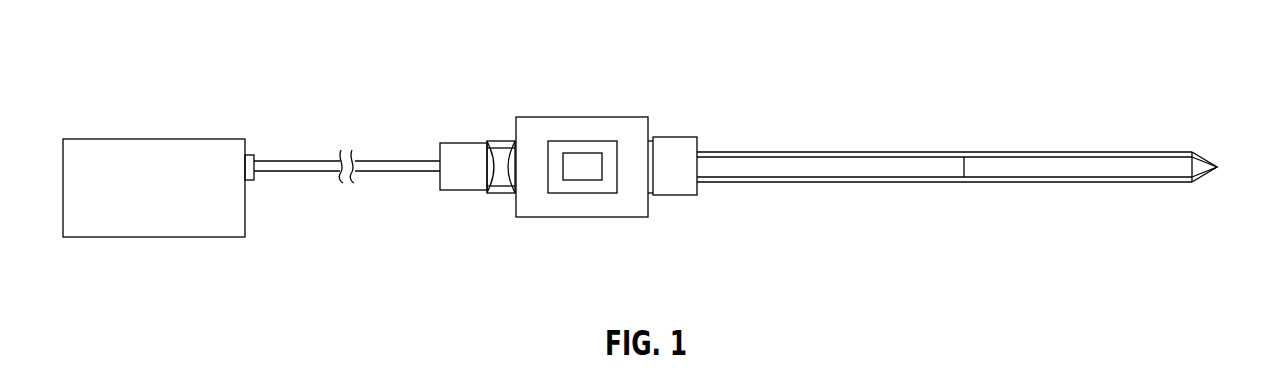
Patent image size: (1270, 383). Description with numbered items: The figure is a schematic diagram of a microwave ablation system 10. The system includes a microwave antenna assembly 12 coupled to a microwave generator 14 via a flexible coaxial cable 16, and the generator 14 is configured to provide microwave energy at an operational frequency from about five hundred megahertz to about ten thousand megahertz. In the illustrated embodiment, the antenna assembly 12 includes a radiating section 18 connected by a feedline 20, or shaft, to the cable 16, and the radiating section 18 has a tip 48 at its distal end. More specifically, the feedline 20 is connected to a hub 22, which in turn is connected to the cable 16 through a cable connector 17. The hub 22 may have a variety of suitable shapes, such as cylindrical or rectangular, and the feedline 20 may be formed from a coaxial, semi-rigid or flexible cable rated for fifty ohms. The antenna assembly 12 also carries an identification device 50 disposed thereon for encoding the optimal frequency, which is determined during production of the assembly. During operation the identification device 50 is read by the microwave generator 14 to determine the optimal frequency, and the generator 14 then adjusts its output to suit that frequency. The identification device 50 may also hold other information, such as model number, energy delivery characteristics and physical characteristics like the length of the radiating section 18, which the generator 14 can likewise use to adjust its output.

The microwave ablation system 10 is at (919, 59).
The microwave antenna assembly 12 is at (678, 100).
The microwave generator 14 is at (165, 210).
The flexible coaxial cable 16 is at (315, 160).
The cable connector 17 is at (465, 143).
The radiating section 18 is at (1080, 152).
The feedline 20 is at (778, 152).
The hub 22 is at (598, 228).
The tip 48 is at (1197, 182).
The identification device 50 is at (588, 141).